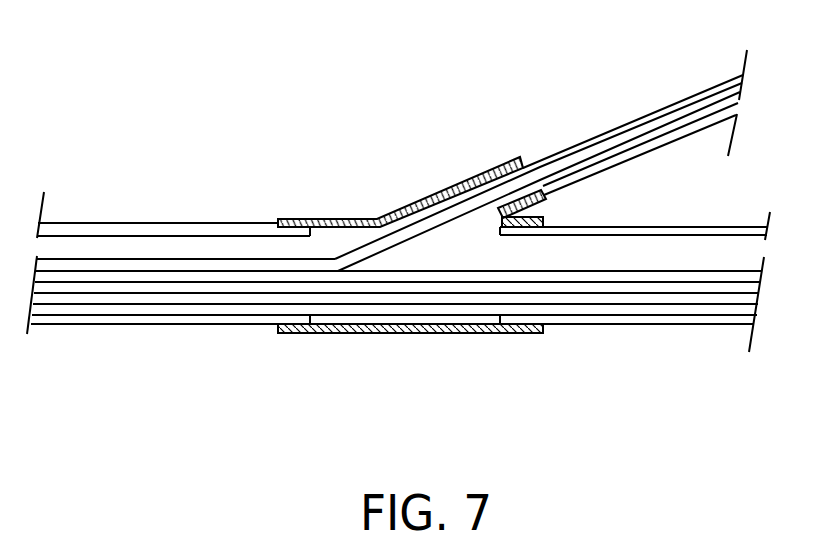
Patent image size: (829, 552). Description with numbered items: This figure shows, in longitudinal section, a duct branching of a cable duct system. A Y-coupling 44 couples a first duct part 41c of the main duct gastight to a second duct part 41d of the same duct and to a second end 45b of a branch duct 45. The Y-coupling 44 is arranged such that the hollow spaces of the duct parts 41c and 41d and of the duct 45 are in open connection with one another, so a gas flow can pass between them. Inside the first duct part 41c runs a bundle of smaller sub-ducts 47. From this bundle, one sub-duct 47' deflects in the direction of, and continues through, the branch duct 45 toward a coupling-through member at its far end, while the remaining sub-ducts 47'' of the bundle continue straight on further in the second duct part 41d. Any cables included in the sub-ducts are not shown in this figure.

The first duct part 41c is at (151, 233).
The second duct part 41d is at (720, 224).
The Y-coupling 44 is at (403, 335).
The duct 45 is at (675, 103).
The second end of the duct 45b is at (547, 152).
The sub-ducts 47 is at (394, 343).
The sub-duct 47' is at (539, 154).
The remaining sub-ducts 47'' is at (662, 343).